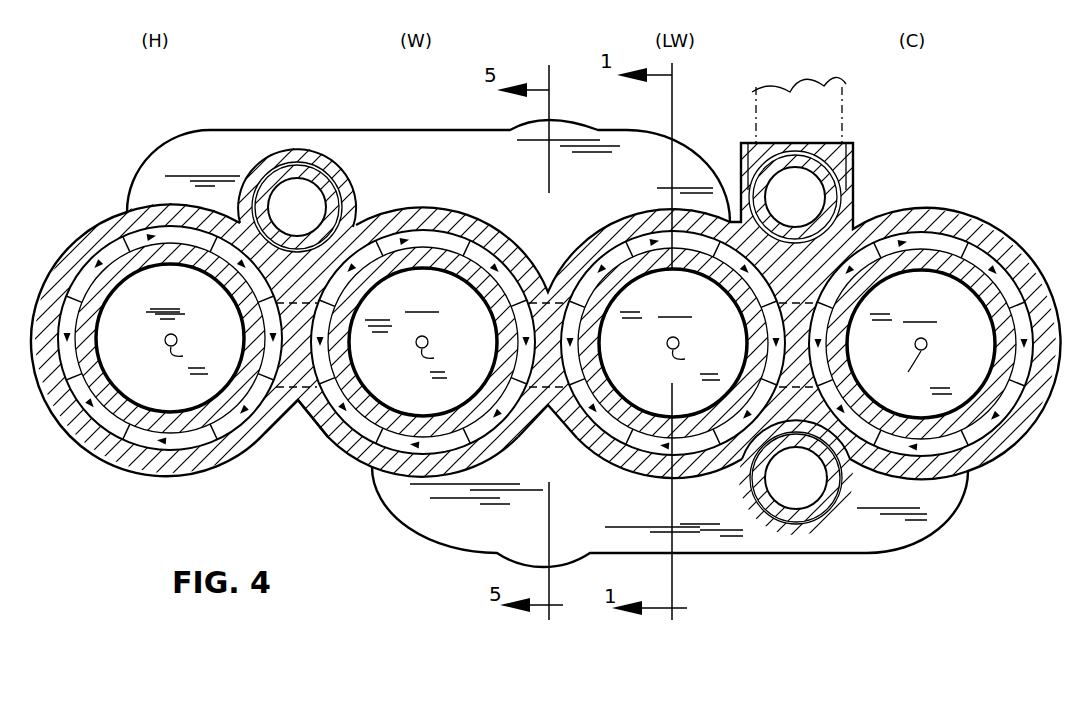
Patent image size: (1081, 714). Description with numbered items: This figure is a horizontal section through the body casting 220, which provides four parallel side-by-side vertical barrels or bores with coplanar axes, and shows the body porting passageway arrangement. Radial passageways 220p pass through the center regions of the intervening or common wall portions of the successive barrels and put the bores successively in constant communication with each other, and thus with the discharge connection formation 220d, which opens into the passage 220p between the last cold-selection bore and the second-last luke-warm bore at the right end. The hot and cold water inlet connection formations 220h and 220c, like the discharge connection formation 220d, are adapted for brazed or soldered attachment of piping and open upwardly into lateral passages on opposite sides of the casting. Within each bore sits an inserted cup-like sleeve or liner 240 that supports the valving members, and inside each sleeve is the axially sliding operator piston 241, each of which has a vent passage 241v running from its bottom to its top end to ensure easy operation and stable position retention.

The body casting 220 is at (318, 463).
The hot water inlet connection formation 220h is at (307, 158).
The discharge connection formation 220d is at (860, 210).
The cold water inlet connection formation 220c is at (812, 520).
The radial passageway 220p is at (297, 410).
The valving member supporting sleeve 240 is at (105, 250).
The operator piston 241 is at (545, 341).
The vent passage 241v is at (560, 357).